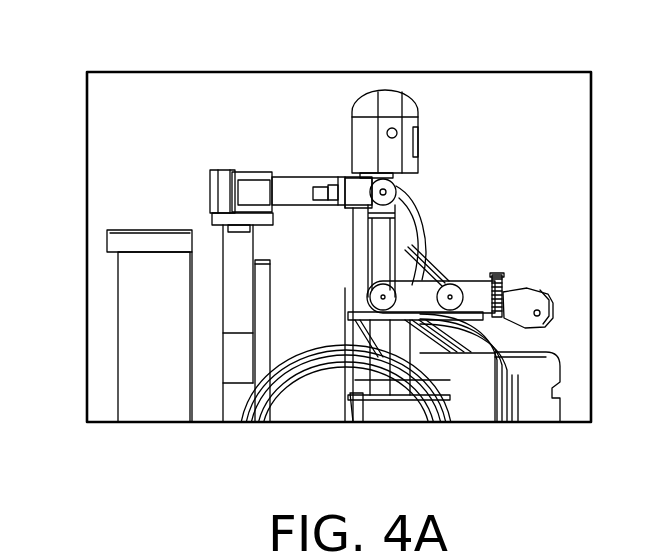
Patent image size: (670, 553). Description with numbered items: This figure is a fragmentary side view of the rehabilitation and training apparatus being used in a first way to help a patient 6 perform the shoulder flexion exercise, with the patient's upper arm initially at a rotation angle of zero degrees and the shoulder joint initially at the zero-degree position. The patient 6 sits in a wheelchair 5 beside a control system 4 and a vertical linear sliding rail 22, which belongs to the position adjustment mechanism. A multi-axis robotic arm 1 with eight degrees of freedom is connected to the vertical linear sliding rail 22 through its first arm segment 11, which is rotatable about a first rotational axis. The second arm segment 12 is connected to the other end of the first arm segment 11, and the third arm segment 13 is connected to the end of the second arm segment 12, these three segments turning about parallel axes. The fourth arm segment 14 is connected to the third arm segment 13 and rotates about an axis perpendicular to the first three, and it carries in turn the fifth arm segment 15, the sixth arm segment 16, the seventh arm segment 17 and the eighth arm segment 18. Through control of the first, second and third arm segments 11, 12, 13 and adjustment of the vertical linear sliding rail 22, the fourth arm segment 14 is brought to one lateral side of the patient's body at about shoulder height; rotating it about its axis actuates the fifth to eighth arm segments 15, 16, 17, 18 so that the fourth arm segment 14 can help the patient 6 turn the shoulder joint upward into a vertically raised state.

The multi-axis robotic arm 1 is at (206, 146).
The control system 4 is at (113, 244).
The wheelchair 5 is at (467, 424).
The patient 6 is at (385, 90).
The first arm segment 11 is at (221, 168).
The second arm segment 12 is at (255, 198).
The third arm segment 13 is at (321, 192).
The fourth arm segment 14 is at (398, 187).
The fifth arm segment 15 is at (393, 213).
The sixth arm segment 16 is at (385, 296).
The seventh arm segment 17 is at (451, 289).
The eighth arm segment 18 is at (500, 283).
The vertical linear sliding rail 22 is at (237, 299).